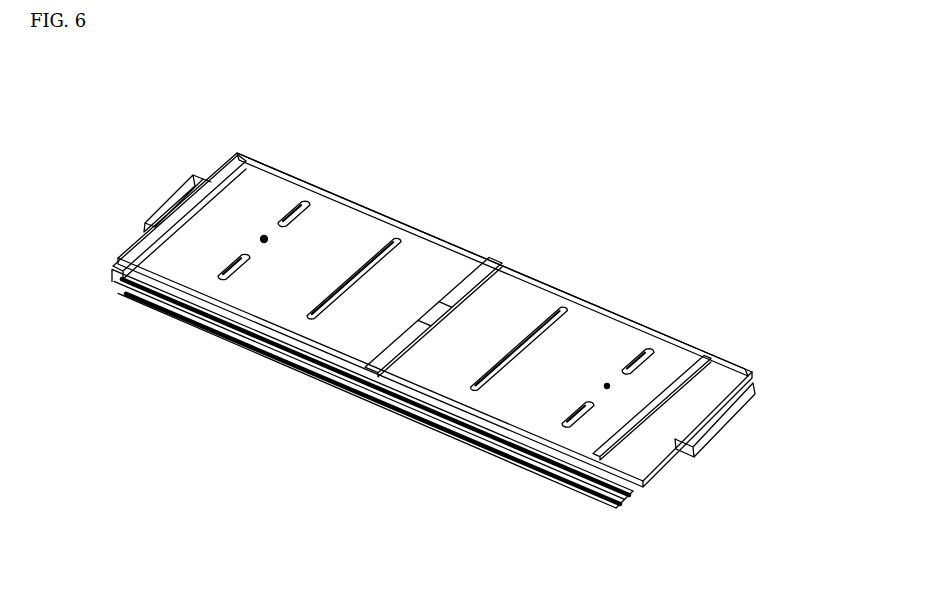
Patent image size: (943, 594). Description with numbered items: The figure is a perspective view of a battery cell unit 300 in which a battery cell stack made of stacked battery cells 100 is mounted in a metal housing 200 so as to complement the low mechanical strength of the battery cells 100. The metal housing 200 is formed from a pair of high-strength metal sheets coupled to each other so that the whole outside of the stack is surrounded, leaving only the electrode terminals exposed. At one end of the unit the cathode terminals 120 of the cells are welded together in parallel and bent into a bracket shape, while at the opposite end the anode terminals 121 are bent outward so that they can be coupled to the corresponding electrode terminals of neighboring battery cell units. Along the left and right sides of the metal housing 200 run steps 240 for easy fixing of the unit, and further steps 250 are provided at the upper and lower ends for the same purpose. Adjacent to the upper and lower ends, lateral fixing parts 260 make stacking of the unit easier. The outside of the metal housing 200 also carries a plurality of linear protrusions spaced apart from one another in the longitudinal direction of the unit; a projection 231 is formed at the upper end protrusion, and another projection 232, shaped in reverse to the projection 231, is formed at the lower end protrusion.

The battery cell unit 300 is at (571, 102).
The battery cells 100 is at (432, 320).
The metal housing 200 is at (372, 388).
The steps 250 is at (232, 153).
The lateral fixing parts 260 is at (272, 176).
The projection 231 is at (264, 236).
The projection 232 is at (607, 383).
The steps 240 is at (417, 413).
The cathode terminals 120 is at (693, 450).
The anode terminals 121 is at (165, 200).